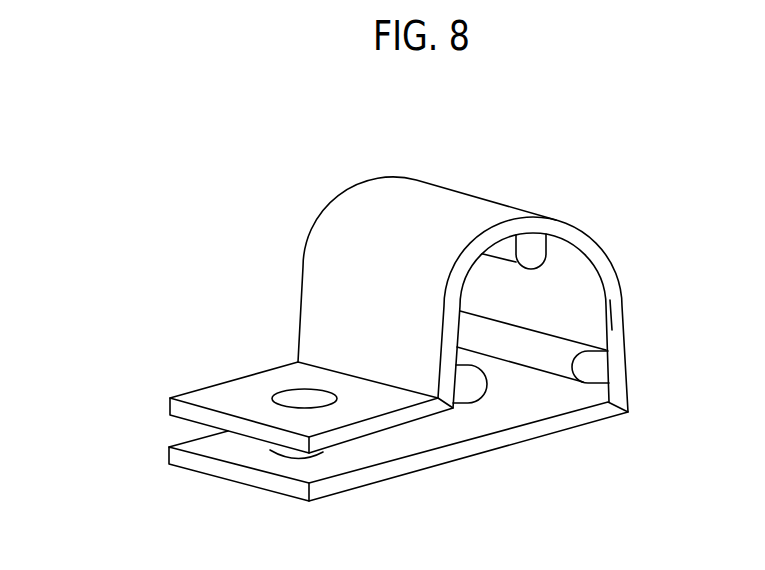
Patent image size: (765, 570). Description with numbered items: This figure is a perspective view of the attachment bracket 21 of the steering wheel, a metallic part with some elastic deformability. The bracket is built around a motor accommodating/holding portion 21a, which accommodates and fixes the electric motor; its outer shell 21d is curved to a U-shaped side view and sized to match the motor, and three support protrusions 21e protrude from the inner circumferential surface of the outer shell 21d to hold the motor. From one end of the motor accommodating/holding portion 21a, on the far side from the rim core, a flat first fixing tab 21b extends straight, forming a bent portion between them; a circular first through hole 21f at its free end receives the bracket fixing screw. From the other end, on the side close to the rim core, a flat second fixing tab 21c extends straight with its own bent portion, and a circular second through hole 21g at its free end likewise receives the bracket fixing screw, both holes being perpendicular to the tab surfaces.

The attachment bracket 21 is at (385, 306).
The motor accommodating/holding portion 21a is at (592, 240).
The first fixing tab 21b is at (178, 457).
The second fixing tab 21c is at (178, 410).
The outer shell 21d is at (613, 318).
The support protrusions 21e is at (528, 253).
The first through hole 21f is at (270, 449).
The second through hole 21g is at (294, 399).